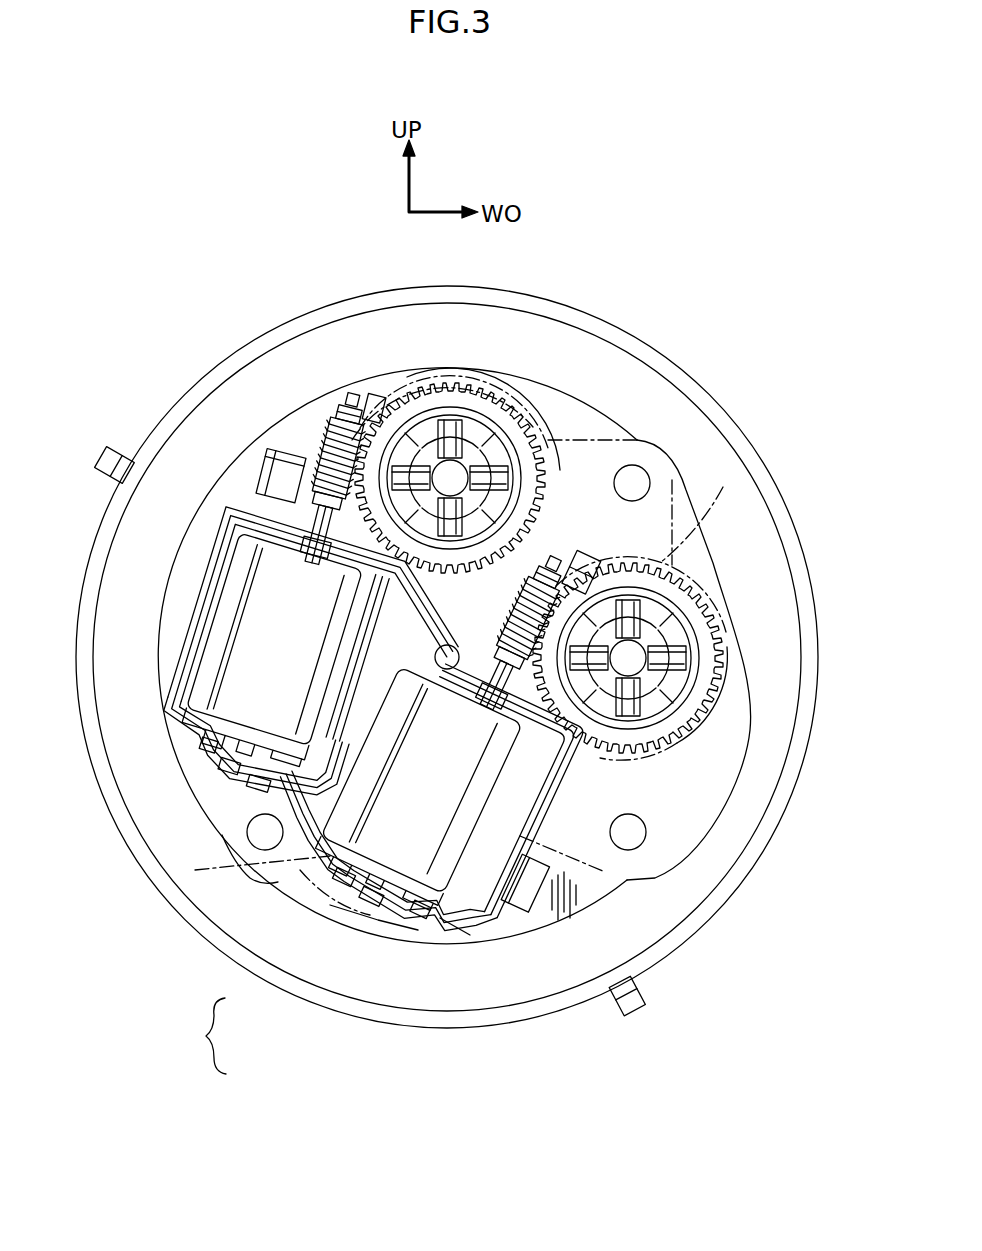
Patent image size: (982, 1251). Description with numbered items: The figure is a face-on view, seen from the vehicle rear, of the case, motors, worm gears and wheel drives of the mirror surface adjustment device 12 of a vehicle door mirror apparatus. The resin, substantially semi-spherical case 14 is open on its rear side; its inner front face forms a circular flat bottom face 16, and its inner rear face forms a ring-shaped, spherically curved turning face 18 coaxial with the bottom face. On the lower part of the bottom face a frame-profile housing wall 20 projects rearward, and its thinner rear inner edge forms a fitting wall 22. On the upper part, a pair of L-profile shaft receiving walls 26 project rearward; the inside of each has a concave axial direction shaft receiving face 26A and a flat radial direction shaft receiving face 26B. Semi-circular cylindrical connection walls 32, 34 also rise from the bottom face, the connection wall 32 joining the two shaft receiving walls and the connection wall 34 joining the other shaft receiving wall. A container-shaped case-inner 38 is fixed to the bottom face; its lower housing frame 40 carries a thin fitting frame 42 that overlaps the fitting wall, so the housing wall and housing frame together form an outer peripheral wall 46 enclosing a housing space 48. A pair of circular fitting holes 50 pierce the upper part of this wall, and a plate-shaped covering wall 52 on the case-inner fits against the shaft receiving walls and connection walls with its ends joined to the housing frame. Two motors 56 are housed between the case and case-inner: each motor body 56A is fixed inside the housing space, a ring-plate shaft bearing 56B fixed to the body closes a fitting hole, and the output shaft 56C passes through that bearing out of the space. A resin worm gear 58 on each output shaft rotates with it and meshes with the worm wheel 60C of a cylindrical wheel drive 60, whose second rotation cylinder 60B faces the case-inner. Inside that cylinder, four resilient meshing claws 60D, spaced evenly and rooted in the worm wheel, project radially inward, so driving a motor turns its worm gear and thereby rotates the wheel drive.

The mirror surface adjustment device 12 is at (186, 266).
The case 14 is at (710, 390).
The bottom face 16 is at (600, 880).
The turning face 18 is at (762, 470).
The housing wall 20 is at (338, 890).
The fitting wall 22 is at (400, 922).
The shaft receiving walls 26 is at (320, 425).
The axial direction shaft receiving face 26A is at (355, 412).
The radial direction shaft receiving face 26B is at (338, 410).
The connection wall 32 is at (546, 458).
The connection wall 34 is at (680, 566).
The case-inner 38 is at (700, 470).
The housing frame 40 is at (335, 905).
The fitting frame 42 is at (455, 945).
The outer peripheral wall 46 is at (198, 1036).
The housing space 48 is at (262, 870).
The fitting holes 50 is at (333, 560).
The covering wall 52 is at (690, 518).
The motors 56 is at (215, 760).
The motor body 56A is at (193, 692).
The shaft bearing 56B is at (290, 540).
The output shaft 56C is at (312, 548).
The worm gear 58 is at (285, 475).
The wheel drives 60 is at (545, 456).
The second rotation cylinder 60B is at (412, 405).
The worm wheel 60C is at (545, 438).
The meshing claws 60D is at (462, 480).